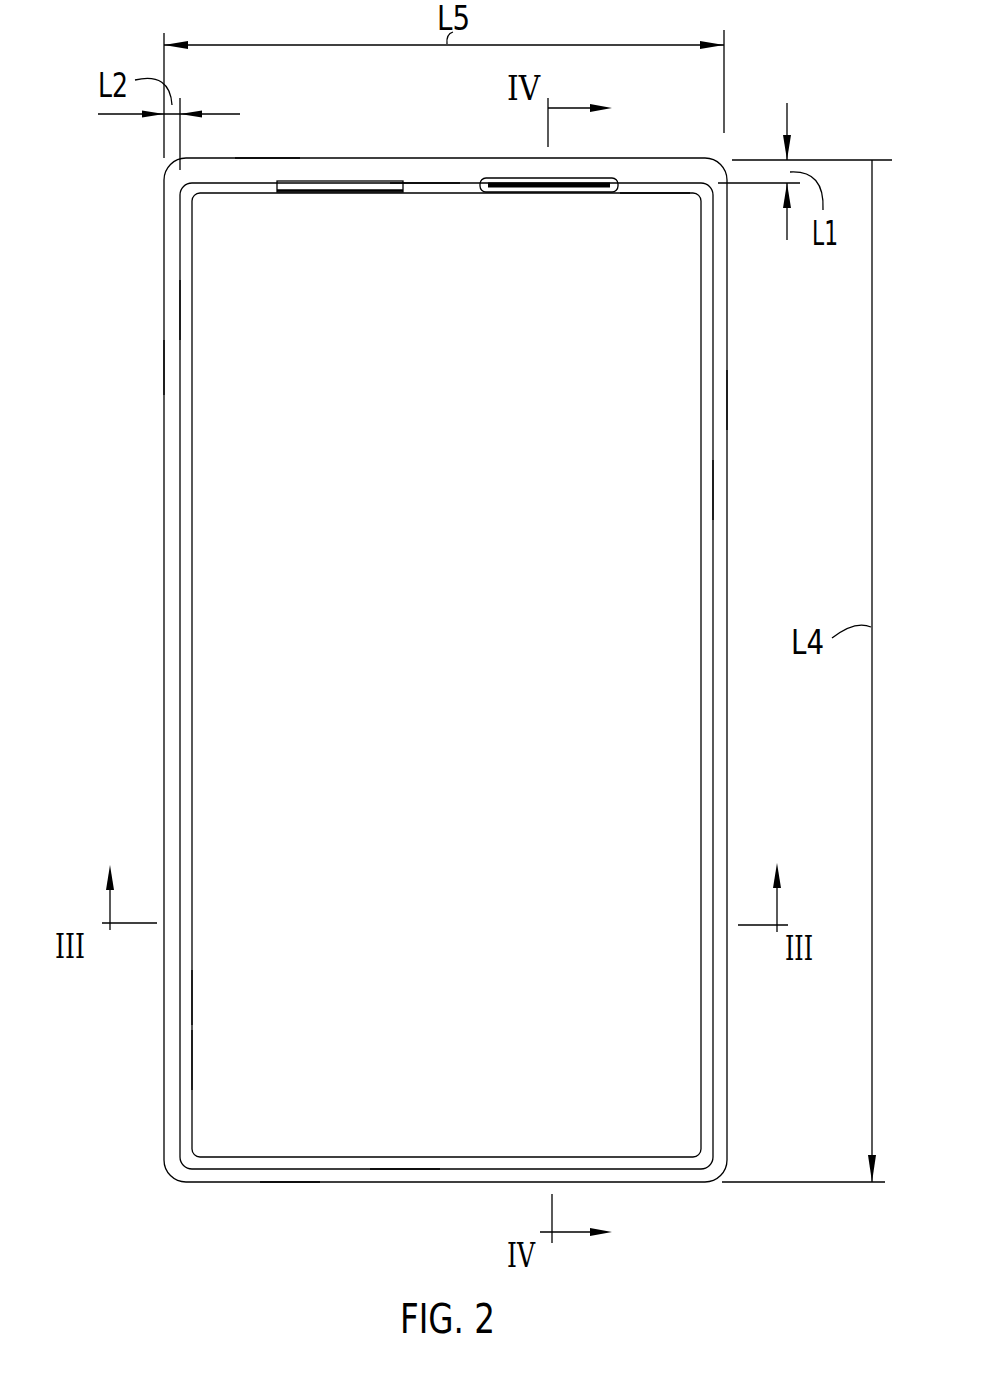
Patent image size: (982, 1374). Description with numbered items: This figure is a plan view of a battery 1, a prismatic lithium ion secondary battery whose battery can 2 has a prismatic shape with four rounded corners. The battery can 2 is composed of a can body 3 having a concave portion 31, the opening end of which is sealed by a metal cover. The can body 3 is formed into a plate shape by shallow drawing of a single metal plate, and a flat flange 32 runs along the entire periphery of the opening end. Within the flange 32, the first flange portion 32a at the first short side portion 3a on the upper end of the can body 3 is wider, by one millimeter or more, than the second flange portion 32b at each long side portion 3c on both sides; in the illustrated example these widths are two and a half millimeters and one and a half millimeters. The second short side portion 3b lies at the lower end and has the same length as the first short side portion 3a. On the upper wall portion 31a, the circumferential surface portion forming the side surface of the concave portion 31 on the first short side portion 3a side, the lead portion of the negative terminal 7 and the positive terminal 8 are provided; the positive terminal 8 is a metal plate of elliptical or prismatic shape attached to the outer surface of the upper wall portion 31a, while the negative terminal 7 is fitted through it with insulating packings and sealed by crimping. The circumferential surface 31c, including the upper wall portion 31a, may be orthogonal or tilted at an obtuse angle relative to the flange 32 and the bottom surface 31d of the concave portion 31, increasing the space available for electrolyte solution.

The battery 1 is at (143, 258).
The battery can 2 is at (730, 398).
The can body 3 is at (495, 645).
The first short side portion 3a is at (265, 157).
The second short side portion 3b is at (290, 1183).
The long side portion 3c is at (163, 366).
The negative terminal 7 is at (567, 178).
The positive terminal 8 is at (338, 187).
The concave portion 31 is at (230, 602).
The upper wall portion 31a is at (652, 194).
The circumferential surface 31c is at (188, 997).
The bottom surface 31d is at (212, 1060).
The flange 32 is at (160, 431).
The first flange portion 32a is at (425, 166).
The second flange portion 32b is at (167, 306).